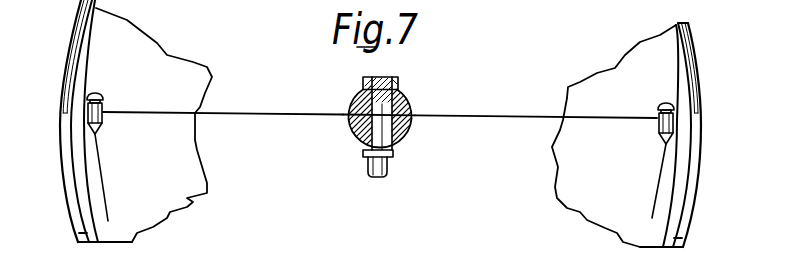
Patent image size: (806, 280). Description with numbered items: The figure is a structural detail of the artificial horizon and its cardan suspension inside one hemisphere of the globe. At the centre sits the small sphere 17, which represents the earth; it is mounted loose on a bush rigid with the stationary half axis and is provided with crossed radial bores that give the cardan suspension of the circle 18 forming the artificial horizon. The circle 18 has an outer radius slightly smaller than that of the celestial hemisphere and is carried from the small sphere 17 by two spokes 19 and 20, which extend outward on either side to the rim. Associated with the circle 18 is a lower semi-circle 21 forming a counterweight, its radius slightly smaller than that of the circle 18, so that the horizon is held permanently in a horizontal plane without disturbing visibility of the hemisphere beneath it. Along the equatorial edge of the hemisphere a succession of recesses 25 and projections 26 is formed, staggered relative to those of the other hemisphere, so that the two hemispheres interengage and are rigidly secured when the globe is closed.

The small sphere 17 is at (412, 100).
The circle 18 is at (88, 61).
The spoke 19 is at (234, 113).
The spoke 20 is at (495, 112).
The semi-circle 21 is at (100, 167).
The recesses 25 is at (190, 12).
The projections 26 is at (283, 0).